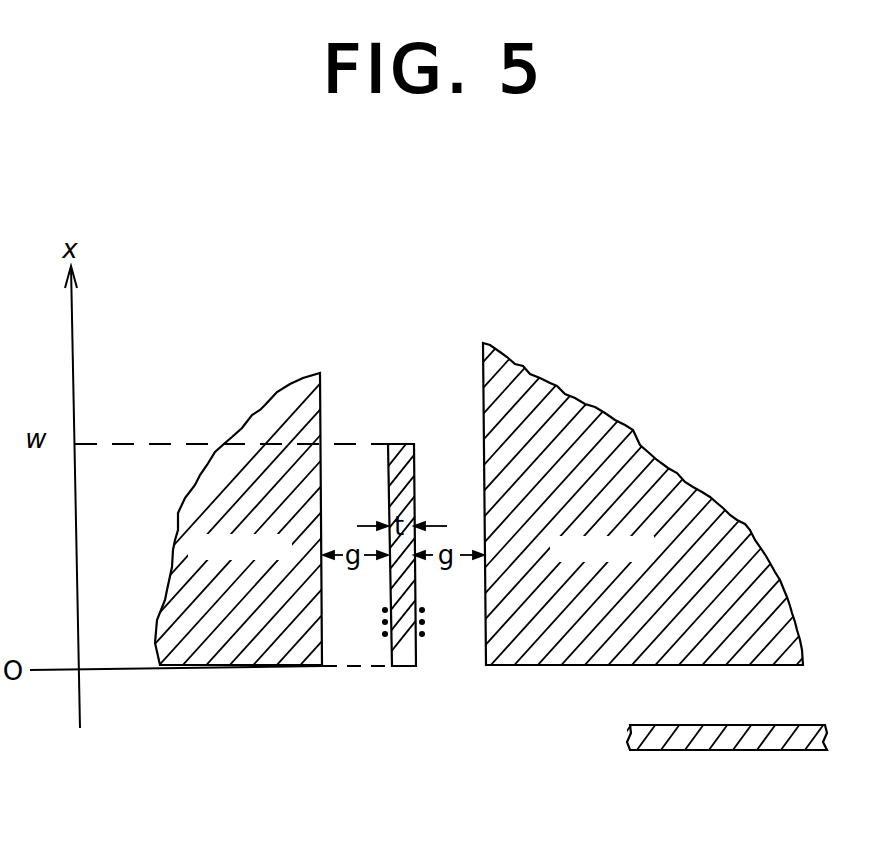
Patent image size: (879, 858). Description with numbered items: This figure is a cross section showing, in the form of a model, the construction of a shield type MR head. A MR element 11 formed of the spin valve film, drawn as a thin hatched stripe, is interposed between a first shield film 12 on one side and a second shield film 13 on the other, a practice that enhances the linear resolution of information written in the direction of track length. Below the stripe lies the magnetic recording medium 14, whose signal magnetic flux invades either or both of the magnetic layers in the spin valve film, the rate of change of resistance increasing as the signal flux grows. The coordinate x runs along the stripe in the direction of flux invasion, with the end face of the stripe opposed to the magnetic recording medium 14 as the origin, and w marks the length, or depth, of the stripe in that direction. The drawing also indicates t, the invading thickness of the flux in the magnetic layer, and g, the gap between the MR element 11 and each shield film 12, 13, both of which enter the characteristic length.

The MR element 11 is at (392, 442).
The shield film 12 is at (256, 410).
The shield film 13 is at (661, 462).
The magnetic recording medium 14 is at (732, 735).